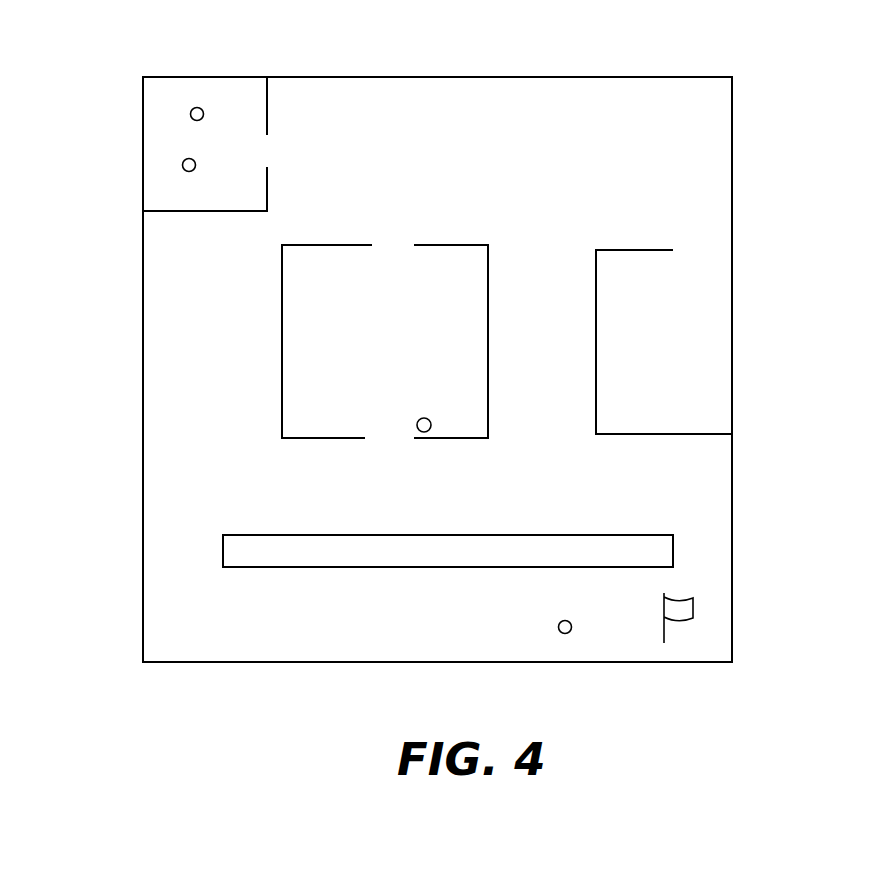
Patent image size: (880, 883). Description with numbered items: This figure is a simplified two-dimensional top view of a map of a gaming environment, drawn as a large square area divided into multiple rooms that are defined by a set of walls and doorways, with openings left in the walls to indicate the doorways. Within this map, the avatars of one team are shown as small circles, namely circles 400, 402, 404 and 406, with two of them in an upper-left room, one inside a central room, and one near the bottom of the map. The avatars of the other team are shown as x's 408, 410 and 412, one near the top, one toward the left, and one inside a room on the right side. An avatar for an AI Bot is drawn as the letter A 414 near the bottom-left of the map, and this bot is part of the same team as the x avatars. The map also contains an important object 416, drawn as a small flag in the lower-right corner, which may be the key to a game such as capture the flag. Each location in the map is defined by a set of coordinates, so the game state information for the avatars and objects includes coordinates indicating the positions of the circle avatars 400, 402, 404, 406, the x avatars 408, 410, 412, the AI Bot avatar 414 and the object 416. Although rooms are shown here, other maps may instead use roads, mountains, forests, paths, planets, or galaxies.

The circle avatar 400 is at (196, 107).
The circle avatar 402 is at (182, 165).
The circle avatar 404 is at (417, 426).
The circle avatar 406 is at (562, 634).
The x avatar 408 is at (378, 126).
The x avatar 410 is at (200, 493).
The x avatar 412 is at (660, 320).
The AI Bot avatar 414 is at (228, 640).
The important object 416 is at (677, 643).